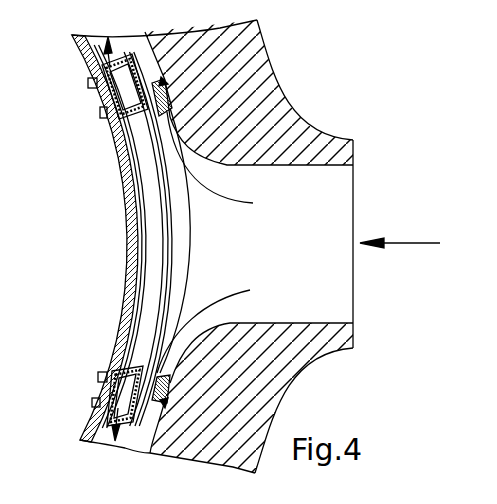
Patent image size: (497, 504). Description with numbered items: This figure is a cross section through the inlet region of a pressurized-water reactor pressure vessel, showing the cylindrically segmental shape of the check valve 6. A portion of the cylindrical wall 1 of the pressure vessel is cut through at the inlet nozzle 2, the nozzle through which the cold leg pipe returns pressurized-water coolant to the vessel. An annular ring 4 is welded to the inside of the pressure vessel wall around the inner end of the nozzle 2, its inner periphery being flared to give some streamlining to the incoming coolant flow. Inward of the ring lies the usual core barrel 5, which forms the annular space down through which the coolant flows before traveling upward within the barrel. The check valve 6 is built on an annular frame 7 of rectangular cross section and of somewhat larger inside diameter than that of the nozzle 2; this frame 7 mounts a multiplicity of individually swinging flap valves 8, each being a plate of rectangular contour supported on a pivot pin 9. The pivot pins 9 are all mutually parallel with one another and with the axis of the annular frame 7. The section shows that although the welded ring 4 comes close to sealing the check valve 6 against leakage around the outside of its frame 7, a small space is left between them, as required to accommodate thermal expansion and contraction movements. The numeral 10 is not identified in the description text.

The cylindrical wall 1 is at (252, 50).
The inlet nozzle 2 is at (353, 142).
The annular ring 4 is at (143, 138).
The core barrel 5 is at (125, 302).
The check valve 6 is at (153, 273).
The annular frame 7 is at (138, 427).
The flap valves 8 is at (110, 92).
The pivot pin 9 is at (143, 373).
The flow channel direction 10 is at (253, 203).